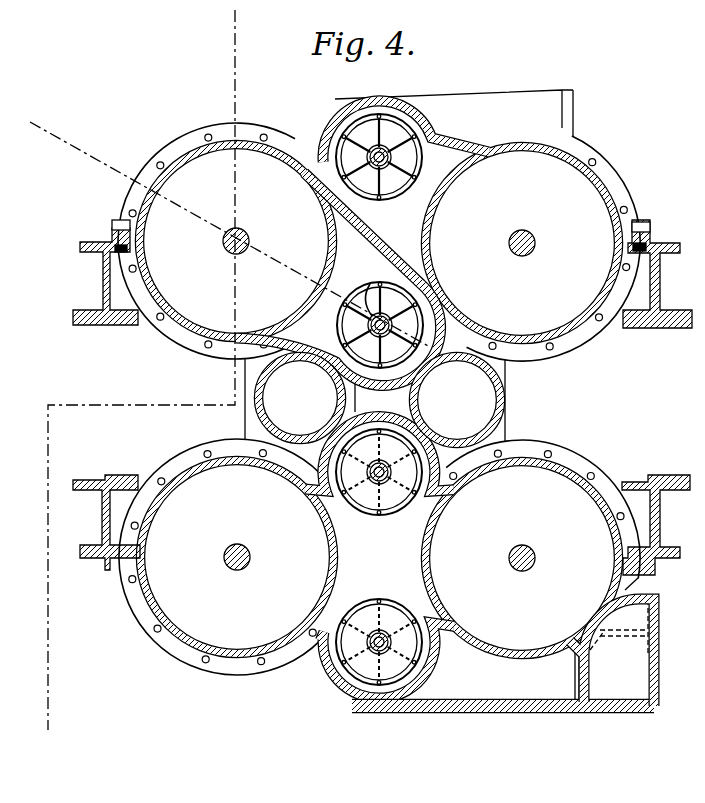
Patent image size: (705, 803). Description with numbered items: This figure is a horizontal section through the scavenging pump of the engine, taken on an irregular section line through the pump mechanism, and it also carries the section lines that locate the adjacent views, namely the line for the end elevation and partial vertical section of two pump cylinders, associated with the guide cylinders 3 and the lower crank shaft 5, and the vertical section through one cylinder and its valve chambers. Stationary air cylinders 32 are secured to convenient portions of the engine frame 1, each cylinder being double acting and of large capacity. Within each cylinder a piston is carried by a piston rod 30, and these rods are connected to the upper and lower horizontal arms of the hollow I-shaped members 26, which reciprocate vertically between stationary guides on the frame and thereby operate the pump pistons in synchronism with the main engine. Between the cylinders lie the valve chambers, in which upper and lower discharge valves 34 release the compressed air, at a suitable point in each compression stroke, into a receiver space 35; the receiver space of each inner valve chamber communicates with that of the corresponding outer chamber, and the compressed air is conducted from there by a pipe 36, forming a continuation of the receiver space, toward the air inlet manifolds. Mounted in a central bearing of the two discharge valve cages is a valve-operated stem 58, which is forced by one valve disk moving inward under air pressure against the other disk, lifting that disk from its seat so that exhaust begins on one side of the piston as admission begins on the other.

The engine frame 1 is at (103, 272).
The guide cylinders 3 is at (222, 47).
The lower crank shaft 5 is at (33, 135).
The I-shaped members 26 is at (258, 384).
The piston rods 30 is at (248, 238).
The air cylinders 32 is at (190, 143).
The discharge valves 34 is at (356, 319).
The receiver space 35 is at (445, 403).
The pipe 36 is at (605, 671).
The valve-operated stem 58 is at (365, 286).